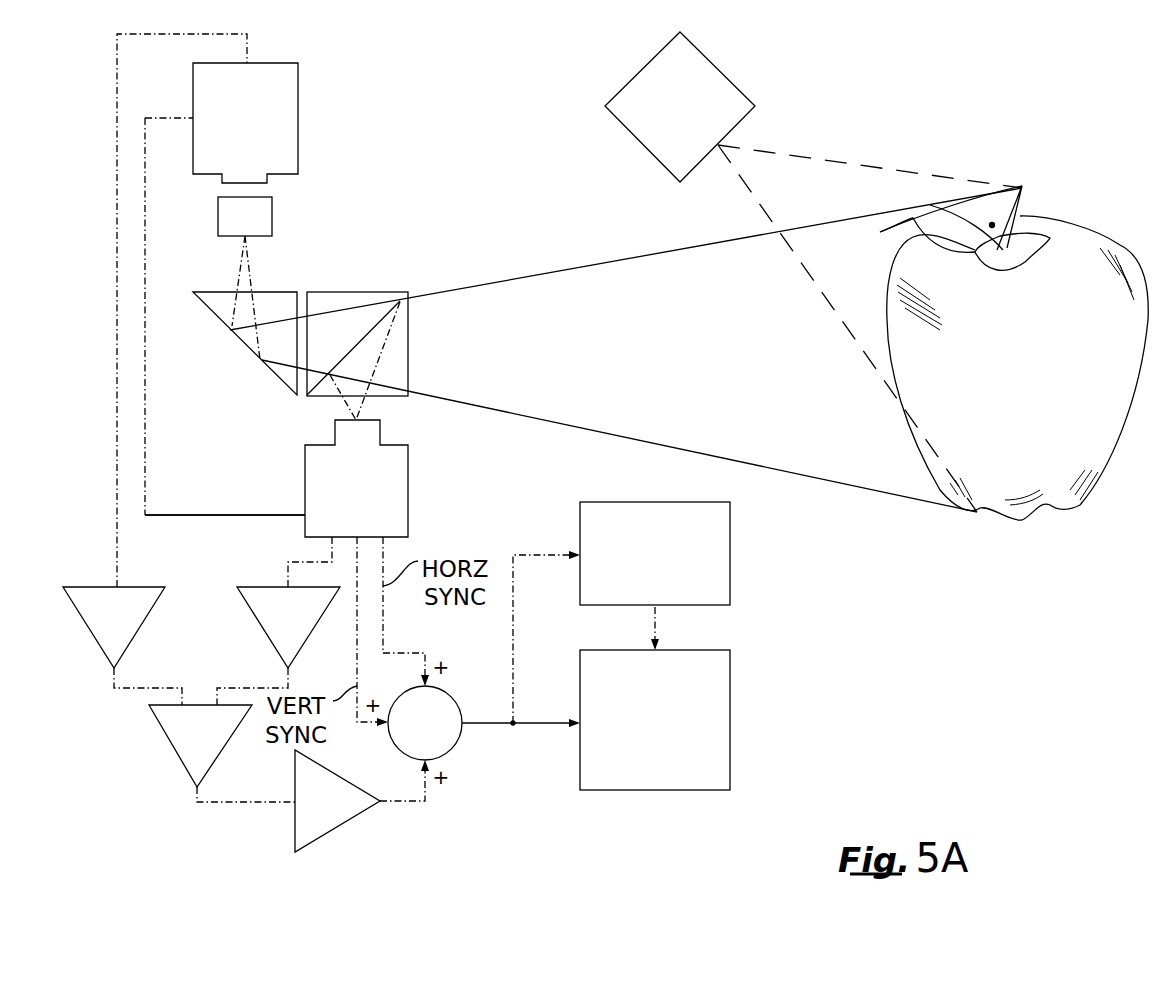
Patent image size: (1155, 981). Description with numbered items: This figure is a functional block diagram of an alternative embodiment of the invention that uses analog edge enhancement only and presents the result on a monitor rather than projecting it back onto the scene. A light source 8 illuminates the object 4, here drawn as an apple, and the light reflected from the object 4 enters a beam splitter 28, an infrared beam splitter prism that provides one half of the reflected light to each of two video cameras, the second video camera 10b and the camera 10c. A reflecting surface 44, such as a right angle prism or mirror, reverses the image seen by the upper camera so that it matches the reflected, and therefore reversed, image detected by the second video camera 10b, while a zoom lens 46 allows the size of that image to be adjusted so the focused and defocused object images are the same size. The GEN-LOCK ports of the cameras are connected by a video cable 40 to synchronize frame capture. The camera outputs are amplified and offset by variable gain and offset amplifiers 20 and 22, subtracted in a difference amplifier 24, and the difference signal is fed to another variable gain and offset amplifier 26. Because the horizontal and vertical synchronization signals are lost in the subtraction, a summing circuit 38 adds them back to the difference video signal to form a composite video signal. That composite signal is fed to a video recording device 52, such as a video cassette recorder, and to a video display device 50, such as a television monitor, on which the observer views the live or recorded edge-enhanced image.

The object 4 is at (1115, 240).
The light source 8 is at (718, 67).
The second video camera 10b is at (408, 518).
The video camera 10c is at (298, 108).
The variable gain and offset amplifier 20 is at (100, 648).
The variable gain and offset amplifier 22 is at (270, 646).
The difference amplifier 24 is at (177, 752).
The variable gain and offset amplifier 26 is at (293, 828).
The beam splitter 28 is at (368, 292).
The summing circuit 38 is at (457, 702).
The video cable 40 is at (240, 515).
The reflecting surface 44 is at (214, 313).
The zoom lens 46 is at (272, 218).
The video display device 50 is at (730, 658).
The video recording device 52 is at (580, 507).